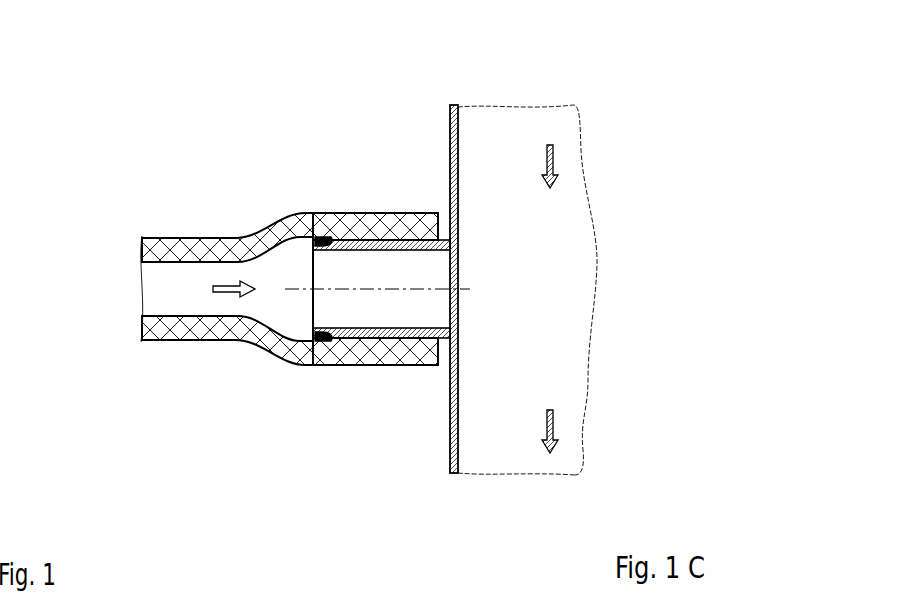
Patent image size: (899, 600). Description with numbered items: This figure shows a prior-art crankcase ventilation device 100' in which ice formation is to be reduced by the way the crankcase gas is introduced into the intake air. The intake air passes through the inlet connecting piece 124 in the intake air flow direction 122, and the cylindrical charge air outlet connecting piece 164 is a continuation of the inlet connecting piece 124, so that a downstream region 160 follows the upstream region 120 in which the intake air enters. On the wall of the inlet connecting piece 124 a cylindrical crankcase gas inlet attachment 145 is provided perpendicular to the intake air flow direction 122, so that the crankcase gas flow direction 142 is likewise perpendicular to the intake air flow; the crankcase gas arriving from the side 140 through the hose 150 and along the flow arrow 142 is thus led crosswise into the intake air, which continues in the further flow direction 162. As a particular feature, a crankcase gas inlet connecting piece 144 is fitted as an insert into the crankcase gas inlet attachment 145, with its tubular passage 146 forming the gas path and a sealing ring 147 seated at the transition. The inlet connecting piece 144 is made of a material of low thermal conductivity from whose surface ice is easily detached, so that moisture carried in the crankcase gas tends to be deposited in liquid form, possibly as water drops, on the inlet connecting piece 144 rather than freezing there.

The ventilation device 100' is at (223, 87).
The tank wall region 120 is at (525, 98).
The intake air flow direction 122 is at (556, 158).
The inlet connecting piece 124 is at (450, 150).
The feed line 140 is at (128, 292).
The crankcase gas flow direction 142 is at (227, 281).
The crankcase gas inlet connecting piece 144 is at (372, 342).
The crankcase gas inlet attachment 145 is at (378, 212).
The inner tube / connecting pipe 146 is at (458, 272).
The sealing ring 147 is at (315, 366).
The flexible hose 150 is at (180, 237).
The lower region 160 is at (525, 480).
The flow direction lower 162 is at (556, 420).
The charge air outlet connecting piece 164 is at (450, 447).